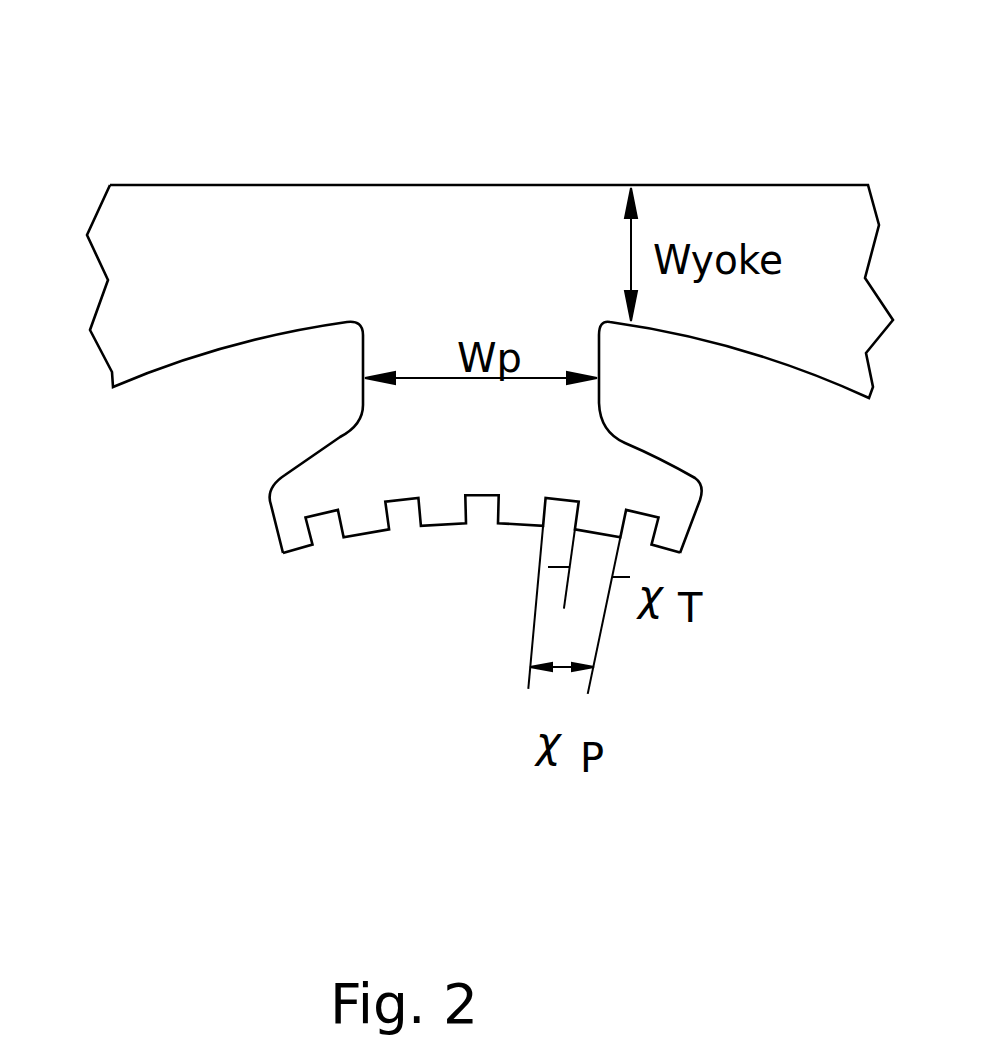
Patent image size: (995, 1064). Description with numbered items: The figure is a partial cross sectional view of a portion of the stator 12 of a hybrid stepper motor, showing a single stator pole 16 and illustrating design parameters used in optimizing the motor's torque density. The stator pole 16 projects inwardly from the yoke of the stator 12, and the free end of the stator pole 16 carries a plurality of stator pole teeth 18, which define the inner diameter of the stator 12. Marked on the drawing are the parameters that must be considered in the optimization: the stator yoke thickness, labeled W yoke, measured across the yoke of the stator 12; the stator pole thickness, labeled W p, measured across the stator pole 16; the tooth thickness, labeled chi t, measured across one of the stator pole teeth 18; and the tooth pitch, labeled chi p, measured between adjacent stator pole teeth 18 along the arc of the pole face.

The stator 12 is at (293, 184).
The stator pole 16 is at (402, 408).
The stator pole teeth 18 is at (298, 533).